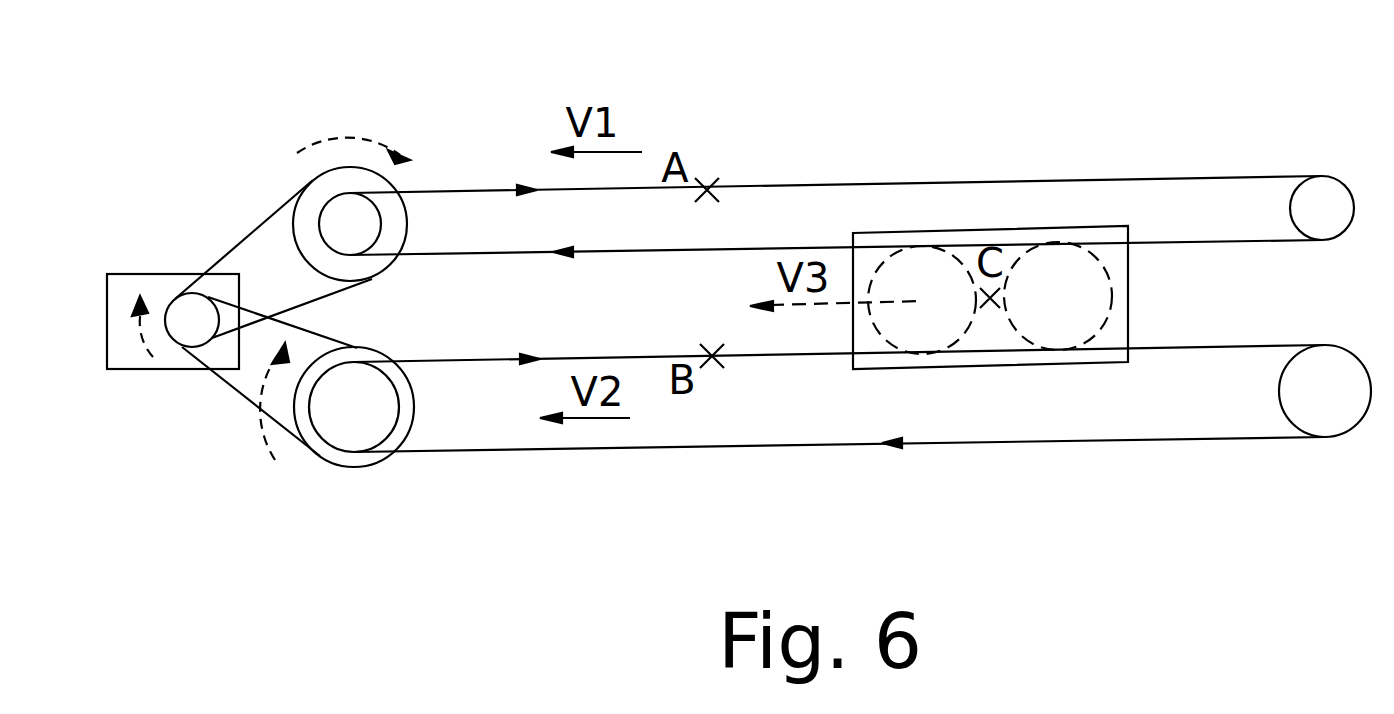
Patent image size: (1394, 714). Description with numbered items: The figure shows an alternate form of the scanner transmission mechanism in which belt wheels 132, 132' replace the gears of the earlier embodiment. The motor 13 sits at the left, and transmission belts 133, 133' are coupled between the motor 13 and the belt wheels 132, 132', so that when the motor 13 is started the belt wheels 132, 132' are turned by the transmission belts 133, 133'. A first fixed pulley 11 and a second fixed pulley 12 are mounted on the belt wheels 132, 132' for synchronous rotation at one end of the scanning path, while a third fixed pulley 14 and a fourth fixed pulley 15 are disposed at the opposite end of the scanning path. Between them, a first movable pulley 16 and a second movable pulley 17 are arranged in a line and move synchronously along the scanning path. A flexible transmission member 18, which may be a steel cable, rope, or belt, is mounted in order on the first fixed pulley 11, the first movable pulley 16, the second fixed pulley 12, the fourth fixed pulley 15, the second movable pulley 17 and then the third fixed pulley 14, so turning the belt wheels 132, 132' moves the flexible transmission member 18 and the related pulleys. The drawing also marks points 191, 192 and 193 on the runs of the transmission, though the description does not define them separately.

The first fixed pulley 11 is at (363, 217).
The second fixed pulley 12 is at (367, 443).
The motor 13 is at (162, 290).
The third fixed pulley 14 is at (1310, 185).
The fourth fixed pulley 15 is at (1322, 418).
The first movable pulley 16 is at (948, 252).
The second movable pulley 17 is at (1090, 257).
The flexible transmission member 18 is at (1108, 442).
The belt wheel 132 is at (332, 124).
The belt wheel 132' is at (252, 453).
The transmission belt 133 is at (264, 231).
The transmission belt 133' is at (242, 379).
The point A on upper belt 191 is at (707, 185).
The point B on lower belt 192 is at (712, 365).
The point C at transfer nip 193 is at (990, 305).